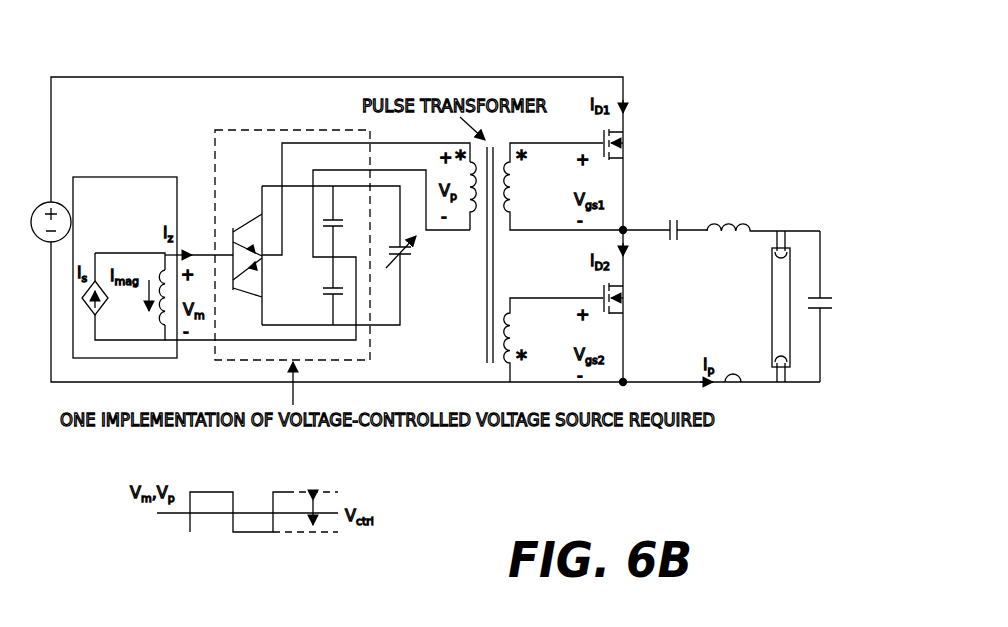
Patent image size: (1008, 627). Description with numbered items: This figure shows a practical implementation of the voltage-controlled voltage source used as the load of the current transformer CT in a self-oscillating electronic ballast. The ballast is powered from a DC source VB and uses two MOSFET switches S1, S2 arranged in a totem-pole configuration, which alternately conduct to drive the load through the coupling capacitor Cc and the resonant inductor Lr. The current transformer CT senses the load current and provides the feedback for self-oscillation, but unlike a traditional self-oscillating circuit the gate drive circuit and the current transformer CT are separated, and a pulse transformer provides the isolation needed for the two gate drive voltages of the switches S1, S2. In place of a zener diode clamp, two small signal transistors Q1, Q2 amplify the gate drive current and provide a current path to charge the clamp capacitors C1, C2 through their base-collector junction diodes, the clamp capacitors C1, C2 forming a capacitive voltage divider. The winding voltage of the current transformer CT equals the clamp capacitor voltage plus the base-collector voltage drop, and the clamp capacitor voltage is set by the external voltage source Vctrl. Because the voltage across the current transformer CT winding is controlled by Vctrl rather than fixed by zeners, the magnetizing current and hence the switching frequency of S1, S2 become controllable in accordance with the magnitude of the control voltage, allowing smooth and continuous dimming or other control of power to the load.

The DC bus voltage source VB is at (39, 208).
The current transformer CT is at (125, 190).
The small signal transistor Q1 is at (244, 224).
The small signal transistor Q2 is at (244, 290).
The clamp capacitor C1 is at (342, 237).
The clamp capacitor C2 is at (321, 304).
The external voltage source Vctrl is at (417, 260).
The MOSFET switch S1 is at (628, 144).
The MOSFET switch S2 is at (628, 298).
The coupling capacitor Cc is at (687, 220).
The resonant inductor Lr is at (763, 215).